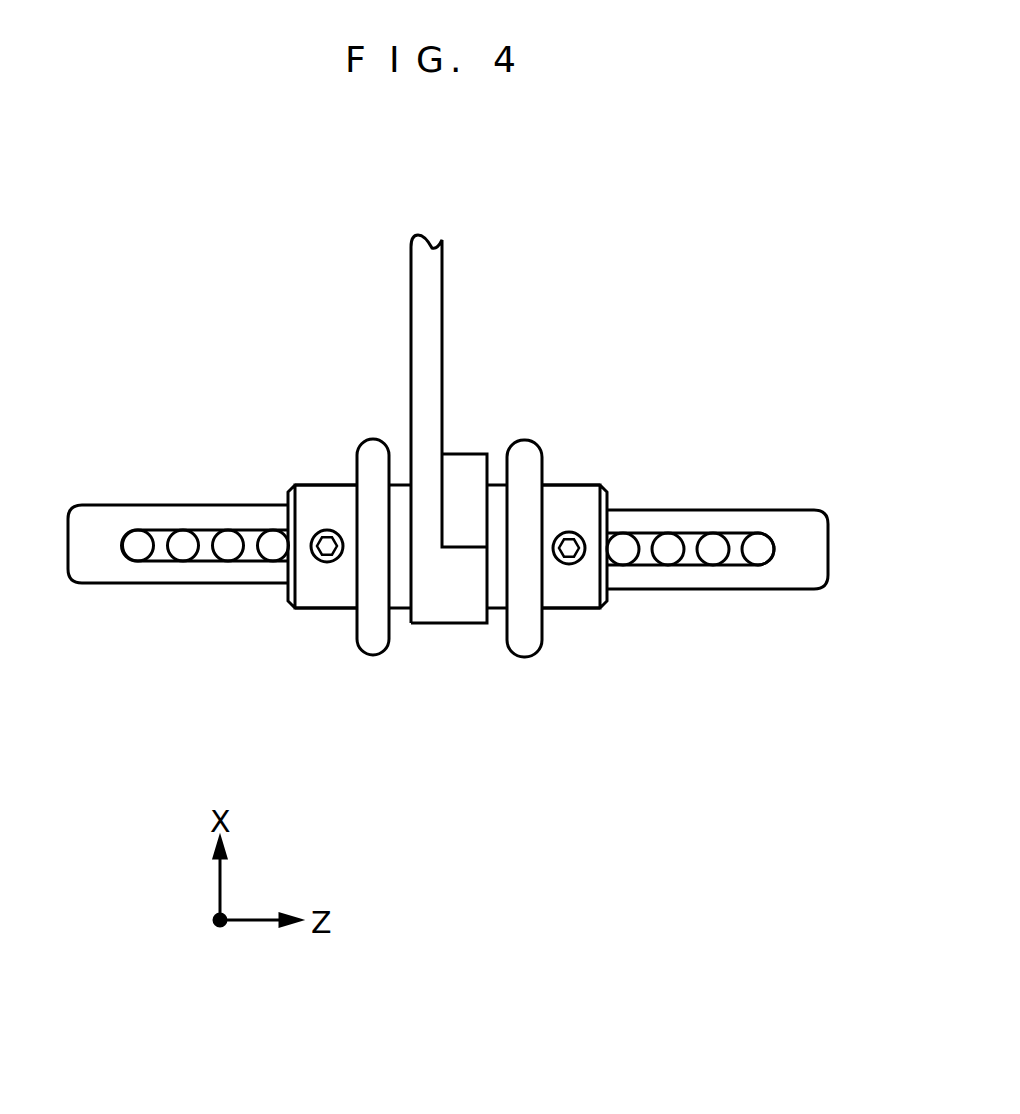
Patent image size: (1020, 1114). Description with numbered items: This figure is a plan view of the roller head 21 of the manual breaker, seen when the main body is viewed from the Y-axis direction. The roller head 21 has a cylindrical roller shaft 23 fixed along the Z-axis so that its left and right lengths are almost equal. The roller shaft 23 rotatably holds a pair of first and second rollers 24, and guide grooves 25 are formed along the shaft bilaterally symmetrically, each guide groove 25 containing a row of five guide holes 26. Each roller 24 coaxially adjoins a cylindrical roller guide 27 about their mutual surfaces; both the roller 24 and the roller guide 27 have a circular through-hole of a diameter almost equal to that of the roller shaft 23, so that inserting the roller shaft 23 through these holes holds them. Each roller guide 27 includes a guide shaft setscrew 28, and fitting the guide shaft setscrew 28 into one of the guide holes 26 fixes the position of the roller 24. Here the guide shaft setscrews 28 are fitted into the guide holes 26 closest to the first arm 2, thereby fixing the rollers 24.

The first arm 2 is at (433, 310).
The roller head 21 is at (712, 313).
The roller shaft 23 is at (820, 545).
The roller 24 is at (373, 438).
The guide groove 25 is at (163, 528).
The guide hole 26 is at (131, 543).
The roller guide 27 is at (318, 600).
The guide shaft setscrew 28 is at (322, 535).